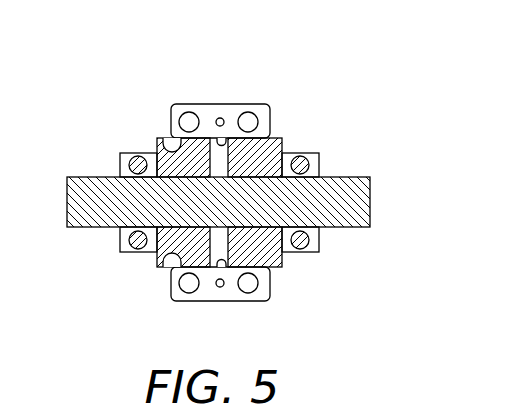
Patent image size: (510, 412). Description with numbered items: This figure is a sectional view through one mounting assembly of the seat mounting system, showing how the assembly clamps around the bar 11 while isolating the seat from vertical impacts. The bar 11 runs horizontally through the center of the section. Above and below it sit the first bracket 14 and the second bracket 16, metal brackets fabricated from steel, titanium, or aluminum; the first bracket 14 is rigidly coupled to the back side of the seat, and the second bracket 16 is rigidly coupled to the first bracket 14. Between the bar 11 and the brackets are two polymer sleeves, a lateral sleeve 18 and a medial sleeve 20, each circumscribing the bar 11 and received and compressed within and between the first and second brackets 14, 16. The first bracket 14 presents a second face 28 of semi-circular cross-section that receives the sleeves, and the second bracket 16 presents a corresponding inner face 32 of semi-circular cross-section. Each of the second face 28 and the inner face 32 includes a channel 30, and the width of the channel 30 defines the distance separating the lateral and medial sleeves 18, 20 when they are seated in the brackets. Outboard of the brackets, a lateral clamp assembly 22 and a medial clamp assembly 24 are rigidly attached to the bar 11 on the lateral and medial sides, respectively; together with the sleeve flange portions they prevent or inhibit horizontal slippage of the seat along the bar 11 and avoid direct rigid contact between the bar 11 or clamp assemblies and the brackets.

The bar 11 is at (372, 196).
The first bracket 14 is at (267, 113).
The second bracket 16 is at (270, 295).
The lateral sleeve 18 is at (155, 140).
The medial sleeve 20 is at (283, 142).
The lateral clamp assembly 22 is at (120, 251).
The medial clamp assembly 24 is at (310, 252).
The second face 28 is at (169, 147).
The channel 30 is at (222, 142).
The inner face 32 is at (172, 258).